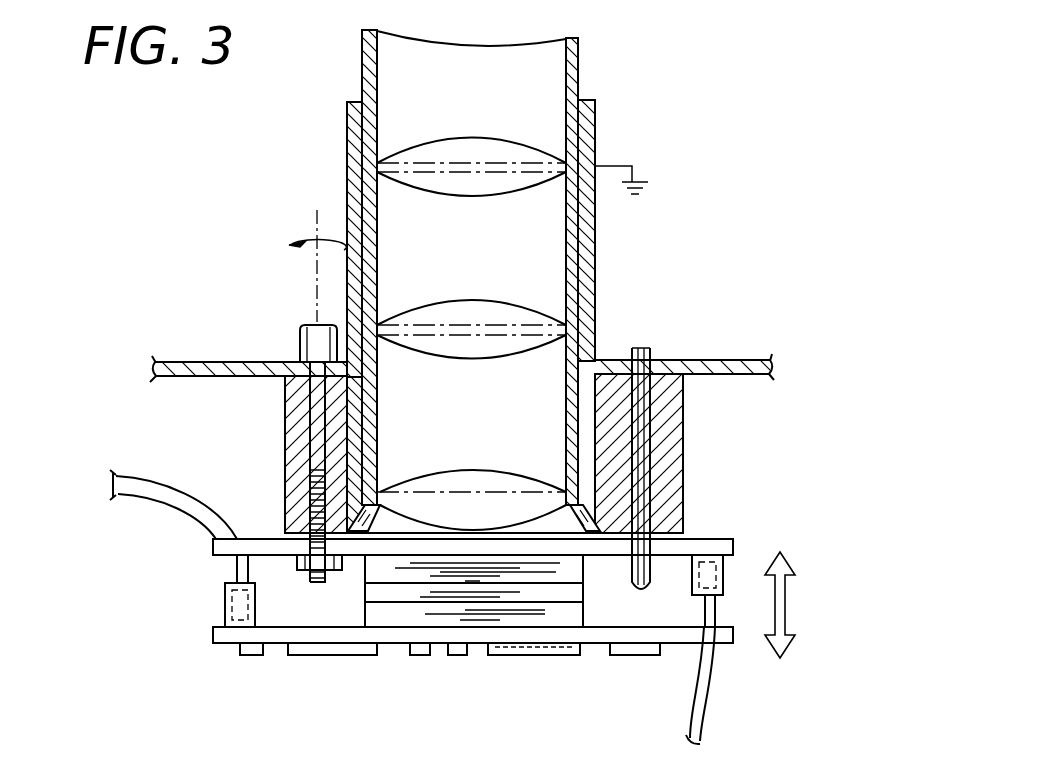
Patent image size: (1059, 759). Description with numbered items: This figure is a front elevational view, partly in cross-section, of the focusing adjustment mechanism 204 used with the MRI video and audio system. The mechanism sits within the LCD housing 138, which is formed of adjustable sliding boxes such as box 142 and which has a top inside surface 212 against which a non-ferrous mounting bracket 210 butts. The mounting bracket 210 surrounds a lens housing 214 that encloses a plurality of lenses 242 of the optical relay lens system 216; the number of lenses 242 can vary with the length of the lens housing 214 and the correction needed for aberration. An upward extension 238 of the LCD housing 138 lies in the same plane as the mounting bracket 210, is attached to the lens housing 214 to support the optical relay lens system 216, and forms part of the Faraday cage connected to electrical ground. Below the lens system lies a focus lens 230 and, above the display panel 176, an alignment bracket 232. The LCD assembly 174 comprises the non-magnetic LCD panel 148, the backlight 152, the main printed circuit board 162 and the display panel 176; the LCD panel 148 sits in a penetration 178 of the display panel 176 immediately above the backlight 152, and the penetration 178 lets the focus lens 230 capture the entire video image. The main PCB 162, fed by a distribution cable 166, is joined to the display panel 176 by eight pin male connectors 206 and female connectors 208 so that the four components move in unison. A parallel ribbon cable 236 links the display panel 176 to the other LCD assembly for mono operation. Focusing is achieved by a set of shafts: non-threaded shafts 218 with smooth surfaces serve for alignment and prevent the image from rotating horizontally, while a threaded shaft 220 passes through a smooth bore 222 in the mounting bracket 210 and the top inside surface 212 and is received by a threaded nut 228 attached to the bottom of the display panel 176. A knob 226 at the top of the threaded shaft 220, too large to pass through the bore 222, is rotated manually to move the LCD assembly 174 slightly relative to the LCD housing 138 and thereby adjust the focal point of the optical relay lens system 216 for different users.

The LCD housing 138 is at (206, 332).
The adjustable sliding box 142 is at (770, 358).
The LCD panel 148 is at (400, 576).
The backlight 152 is at (557, 598).
The main printed circuit board 162 is at (437, 621).
The distribution cable 166 is at (690, 700).
The LCD assembly 174 is at (137, 594).
The display panel 176 is at (693, 538).
The penetration 178 is at (605, 541).
The focusing adjustment mechanism 204 is at (282, 405).
The male connector 206 is at (237, 571).
The female connector 208 is at (225, 606).
The mounting bracket 210 is at (285, 439).
The top inside surface 212 is at (150, 380).
The lens housing 214 is at (579, 66).
The optical relay lens system 216 is at (425, 237).
The non-threaded shaft 218 is at (645, 345).
The threaded shaft 220 is at (327, 583).
The bore 222 is at (655, 351).
The knob 226 is at (300, 337).
The threaded nut 228 is at (300, 563).
The focus lens 230 is at (472, 473).
The alignment bracket 232 is at (678, 537).
The parallel ribbon cable 236 is at (140, 477).
The upward extension 238 is at (347, 184).
The lens 242 is at (470, 141).